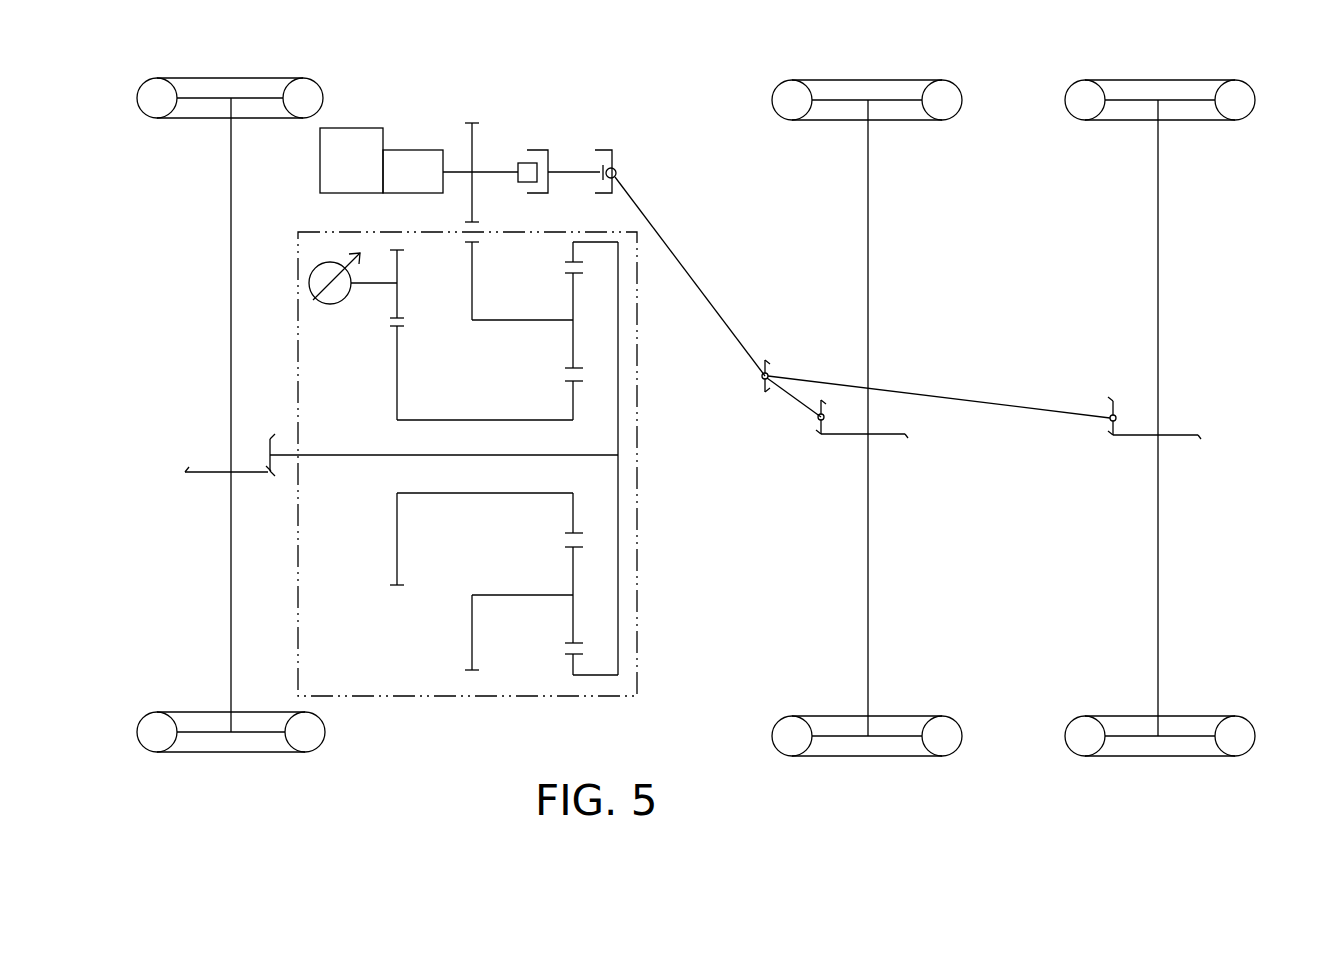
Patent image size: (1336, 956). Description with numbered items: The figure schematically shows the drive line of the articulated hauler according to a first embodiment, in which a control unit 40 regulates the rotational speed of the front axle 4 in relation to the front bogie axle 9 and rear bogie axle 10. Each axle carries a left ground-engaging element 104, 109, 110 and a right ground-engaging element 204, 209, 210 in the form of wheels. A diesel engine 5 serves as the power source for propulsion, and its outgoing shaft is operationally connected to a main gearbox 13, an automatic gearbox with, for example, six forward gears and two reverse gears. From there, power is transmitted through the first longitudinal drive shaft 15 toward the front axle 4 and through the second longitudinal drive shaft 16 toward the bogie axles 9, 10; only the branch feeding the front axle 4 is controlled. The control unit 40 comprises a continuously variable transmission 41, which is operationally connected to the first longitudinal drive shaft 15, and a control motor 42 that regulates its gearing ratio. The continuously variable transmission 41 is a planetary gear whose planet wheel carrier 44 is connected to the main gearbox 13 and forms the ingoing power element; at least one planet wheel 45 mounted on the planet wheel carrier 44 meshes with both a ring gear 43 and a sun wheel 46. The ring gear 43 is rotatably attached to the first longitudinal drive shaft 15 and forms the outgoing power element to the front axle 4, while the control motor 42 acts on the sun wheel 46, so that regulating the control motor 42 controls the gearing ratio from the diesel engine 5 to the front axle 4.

The front axle 4 is at (247, 777).
The diesel engine 5 is at (374, 105).
The front bogie axle 9 is at (897, 776).
The rear bogie axle 10 is at (1140, 780).
The main gearbox 13 is at (412, 123).
The first longitudinal drive shaft 15 is at (340, 452).
The second longitudinal drive shaft 16 is at (693, 277).
The control unit 40 is at (555, 698).
The continuously variable transmission 41 is at (500, 687).
The control motor 42 is at (310, 269).
The ring gear 43 is at (618, 405).
The planet wheel carrier 44 is at (472, 292).
The planet wheel 45 is at (573, 293).
The sun wheel 46 is at (573, 400).
The left ground-engaging element 104 is at (325, 736).
The left ground-engaging element 109 is at (775, 733).
The left ground-engaging element 110 is at (1245, 756).
The right ground-engaging element 204 is at (312, 78).
The right ground-engaging element 209 is at (962, 97).
The right ground-engaging element 210 is at (1245, 85).